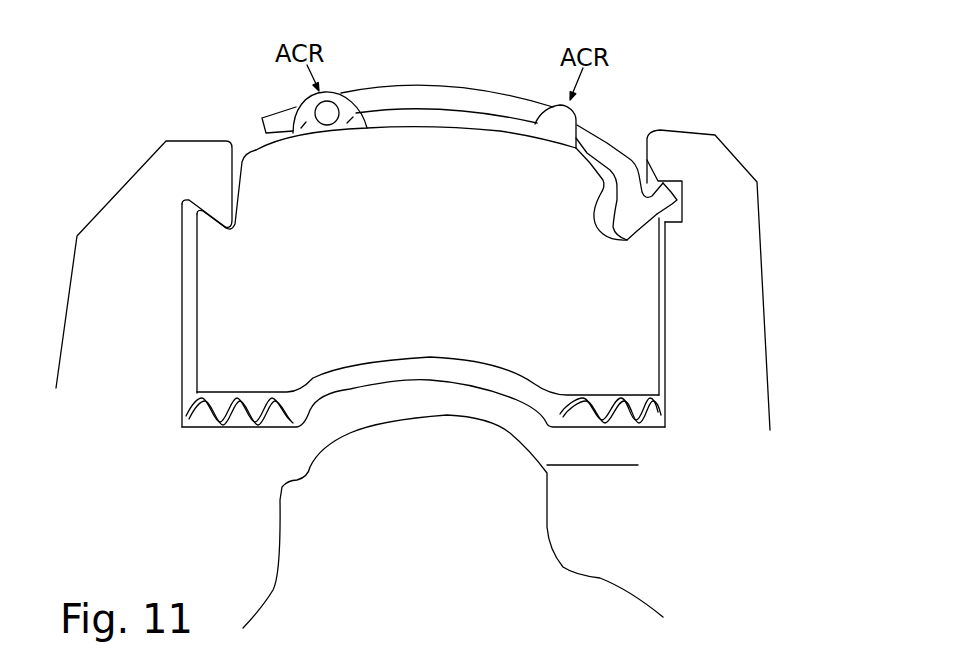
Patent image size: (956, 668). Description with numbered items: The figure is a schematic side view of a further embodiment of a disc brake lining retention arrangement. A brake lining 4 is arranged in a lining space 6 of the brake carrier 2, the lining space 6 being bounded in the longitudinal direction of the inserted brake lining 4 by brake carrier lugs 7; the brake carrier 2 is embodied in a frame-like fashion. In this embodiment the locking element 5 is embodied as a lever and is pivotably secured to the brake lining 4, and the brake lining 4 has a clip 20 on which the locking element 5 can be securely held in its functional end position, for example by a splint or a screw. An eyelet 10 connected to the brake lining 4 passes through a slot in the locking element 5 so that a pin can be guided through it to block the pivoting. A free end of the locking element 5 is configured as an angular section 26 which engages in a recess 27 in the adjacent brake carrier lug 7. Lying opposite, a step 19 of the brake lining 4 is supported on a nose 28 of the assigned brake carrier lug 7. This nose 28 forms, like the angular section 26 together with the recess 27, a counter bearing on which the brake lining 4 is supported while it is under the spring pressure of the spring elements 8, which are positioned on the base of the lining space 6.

The brake carrier 2 is at (772, 238).
The brake lining 4 is at (642, 347).
The locking element 5 is at (425, 100).
The lining space 6 is at (352, 372).
The brake carrier lug 7 is at (107, 247).
The spring element 8 is at (240, 400).
The eyelet 10 is at (572, 122).
The step 19 is at (215, 246).
The clip 20 is at (335, 92).
The angular section 26 is at (632, 218).
The recess 27 is at (675, 215).
The nose 28 is at (218, 207).